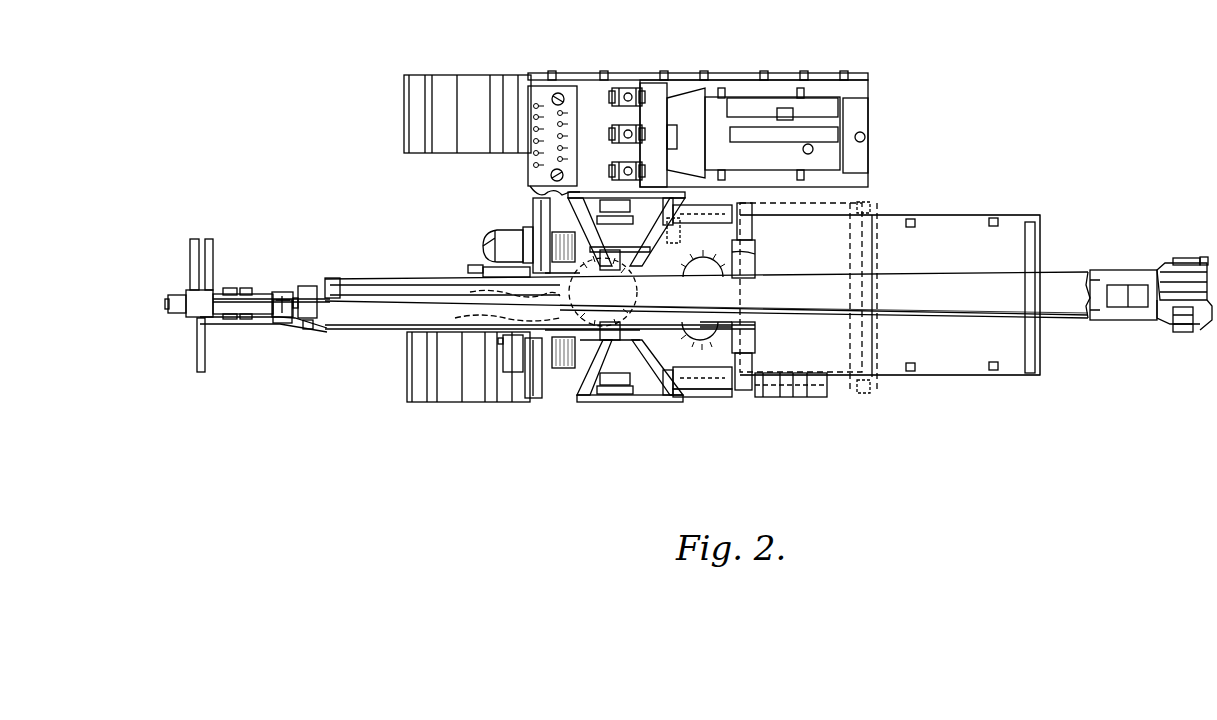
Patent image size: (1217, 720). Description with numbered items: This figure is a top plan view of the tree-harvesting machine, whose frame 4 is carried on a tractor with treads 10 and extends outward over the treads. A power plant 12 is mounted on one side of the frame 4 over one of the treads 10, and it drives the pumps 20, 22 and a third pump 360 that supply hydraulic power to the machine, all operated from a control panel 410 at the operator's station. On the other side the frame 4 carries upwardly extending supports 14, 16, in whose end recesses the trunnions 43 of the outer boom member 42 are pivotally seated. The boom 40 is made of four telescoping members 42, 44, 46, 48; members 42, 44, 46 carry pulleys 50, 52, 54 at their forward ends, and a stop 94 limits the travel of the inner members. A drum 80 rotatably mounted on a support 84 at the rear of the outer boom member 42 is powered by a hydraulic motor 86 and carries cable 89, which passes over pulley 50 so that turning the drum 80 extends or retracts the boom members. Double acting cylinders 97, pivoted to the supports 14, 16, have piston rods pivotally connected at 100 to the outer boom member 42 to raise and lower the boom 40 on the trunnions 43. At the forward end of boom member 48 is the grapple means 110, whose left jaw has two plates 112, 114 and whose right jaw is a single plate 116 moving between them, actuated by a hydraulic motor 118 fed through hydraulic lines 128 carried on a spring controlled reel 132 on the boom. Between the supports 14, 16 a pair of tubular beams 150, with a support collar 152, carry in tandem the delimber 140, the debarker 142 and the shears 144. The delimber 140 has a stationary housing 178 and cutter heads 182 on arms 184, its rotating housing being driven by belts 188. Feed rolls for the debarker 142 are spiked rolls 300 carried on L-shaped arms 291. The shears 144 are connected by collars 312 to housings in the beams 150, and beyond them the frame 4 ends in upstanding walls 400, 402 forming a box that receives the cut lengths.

The frame 4 is at (1022, 376).
The treads 10 is at (445, 78).
The power plant 12 is at (830, 95).
The upwardly extending support 14 is at (580, 402).
The upwardly extending support 16 is at (528, 189).
The pump 20 is at (621, 88).
The pump 22 is at (612, 172).
The boom 40 is at (982, 286).
The outer boom member 42 is at (386, 279).
The trunnions 43 is at (614, 216).
The boom member 44 is at (309, 330).
The boom member 46 is at (286, 324).
The boom member 48 is at (262, 326).
The pulley 50 is at (336, 278).
The pulley 52 is at (310, 284).
The pulley 54 is at (283, 288).
The drum 80 is at (1208, 314).
The support 84 is at (1140, 270).
The hydraulic motor 86 is at (1212, 262).
The cable 89 is at (818, 308).
The stop 94 is at (266, 290).
The double acting cylinder 97 is at (500, 292).
The pivotal connection 100 is at (468, 262).
The grapple means 110 is at (173, 290).
The plate 112 is at (186, 240).
The plate 114 is at (214, 240).
The plate 116 is at (205, 362).
The hydraulic motor 118 is at (244, 286).
The hydraulic lines 128 is at (337, 330).
The spring controlled reel 132 is at (755, 339).
The delimber 140 is at (524, 212).
The debarker 142 is at (650, 262).
The shears 144 is at (773, 249).
The tubular beams 150 is at (700, 204).
The support collar 152 is at (625, 402).
The stationary housing 178 is at (526, 405).
The cutter head 182 is at (473, 240).
The arm 184 is at (502, 404).
The belts 188 is at (556, 402).
The L-shaped arm 291 is at (722, 258).
The spiked rolls 300 is at (840, 261).
The collars 312 is at (758, 398).
The pump 360 is at (614, 125).
The upstanding wall 400 is at (989, 222).
The upstanding wall 402 is at (1035, 237).
The control panel 410 is at (553, 86).